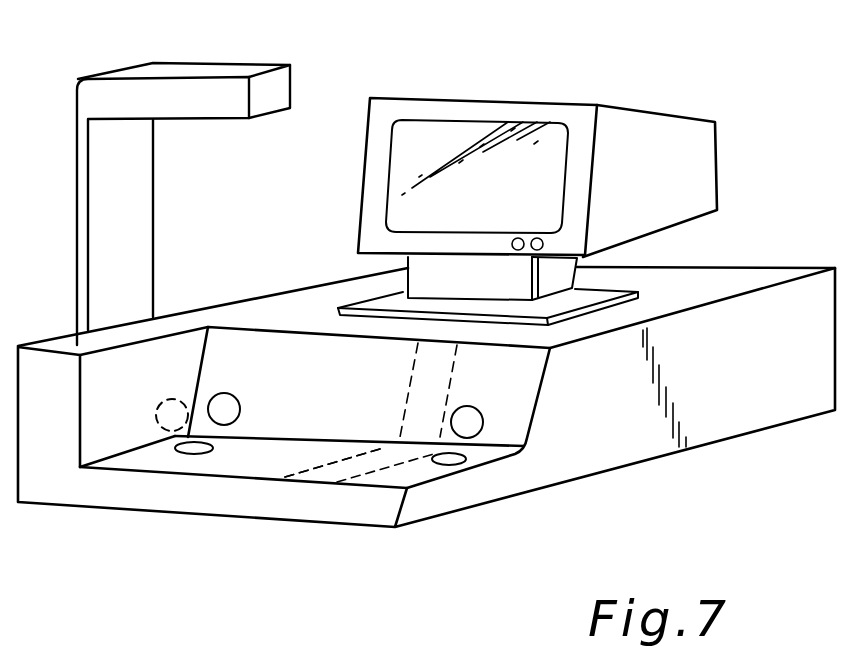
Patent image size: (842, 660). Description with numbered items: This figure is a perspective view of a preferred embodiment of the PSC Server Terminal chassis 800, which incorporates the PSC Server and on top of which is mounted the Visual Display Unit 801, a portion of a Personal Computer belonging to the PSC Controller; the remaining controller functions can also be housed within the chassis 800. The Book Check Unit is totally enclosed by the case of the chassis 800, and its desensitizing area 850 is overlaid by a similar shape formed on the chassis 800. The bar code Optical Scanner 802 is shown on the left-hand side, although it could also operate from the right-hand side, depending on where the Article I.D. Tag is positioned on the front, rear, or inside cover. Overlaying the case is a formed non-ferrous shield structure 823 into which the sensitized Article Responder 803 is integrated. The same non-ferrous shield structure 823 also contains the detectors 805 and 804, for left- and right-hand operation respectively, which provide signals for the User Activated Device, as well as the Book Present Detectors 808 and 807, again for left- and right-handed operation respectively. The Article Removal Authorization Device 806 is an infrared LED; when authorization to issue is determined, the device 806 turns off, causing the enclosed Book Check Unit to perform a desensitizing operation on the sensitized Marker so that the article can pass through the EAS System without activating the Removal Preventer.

The PSC Server Terminal chassis 800 is at (748, 445).
The Visual Display Unit 801 is at (698, 160).
The bar code Optical Scanner 802 is at (233, 70).
The sensitized Article Responder 803 is at (321, 463).
The detector 804 is at (465, 458).
The detector 805 is at (203, 450).
The Article Removal Authorization Device 806 is at (157, 413).
The Book Present Detector 807 is at (483, 427).
The Book Present Detector 808 is at (222, 393).
The formed non-ferrous shield structure 823 is at (410, 382).
The desensitizing area 850 is at (421, 478).